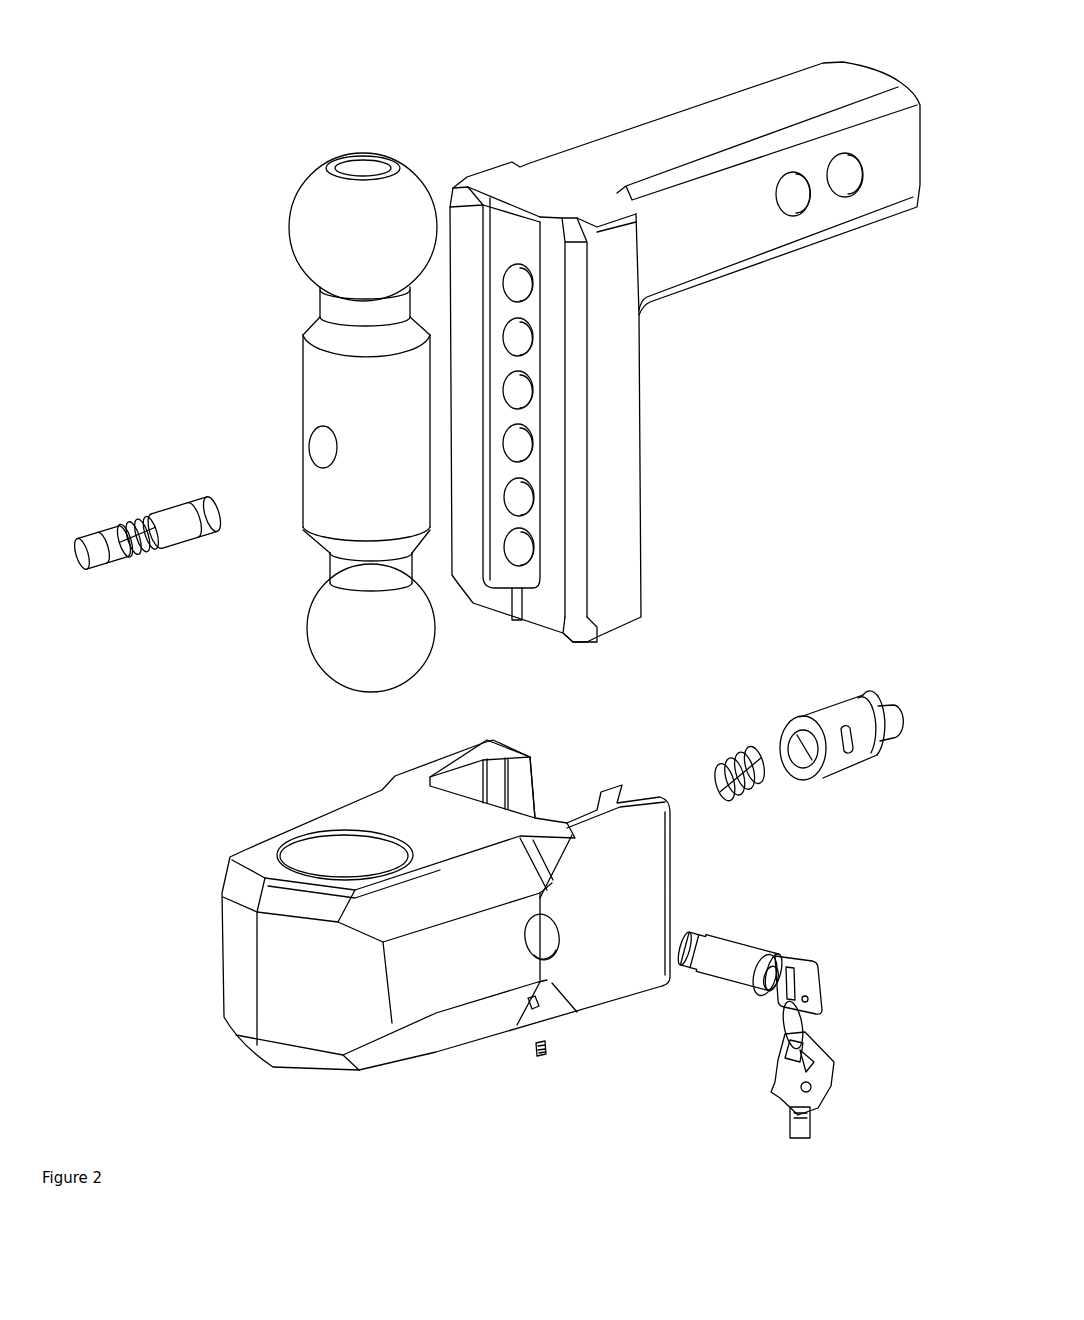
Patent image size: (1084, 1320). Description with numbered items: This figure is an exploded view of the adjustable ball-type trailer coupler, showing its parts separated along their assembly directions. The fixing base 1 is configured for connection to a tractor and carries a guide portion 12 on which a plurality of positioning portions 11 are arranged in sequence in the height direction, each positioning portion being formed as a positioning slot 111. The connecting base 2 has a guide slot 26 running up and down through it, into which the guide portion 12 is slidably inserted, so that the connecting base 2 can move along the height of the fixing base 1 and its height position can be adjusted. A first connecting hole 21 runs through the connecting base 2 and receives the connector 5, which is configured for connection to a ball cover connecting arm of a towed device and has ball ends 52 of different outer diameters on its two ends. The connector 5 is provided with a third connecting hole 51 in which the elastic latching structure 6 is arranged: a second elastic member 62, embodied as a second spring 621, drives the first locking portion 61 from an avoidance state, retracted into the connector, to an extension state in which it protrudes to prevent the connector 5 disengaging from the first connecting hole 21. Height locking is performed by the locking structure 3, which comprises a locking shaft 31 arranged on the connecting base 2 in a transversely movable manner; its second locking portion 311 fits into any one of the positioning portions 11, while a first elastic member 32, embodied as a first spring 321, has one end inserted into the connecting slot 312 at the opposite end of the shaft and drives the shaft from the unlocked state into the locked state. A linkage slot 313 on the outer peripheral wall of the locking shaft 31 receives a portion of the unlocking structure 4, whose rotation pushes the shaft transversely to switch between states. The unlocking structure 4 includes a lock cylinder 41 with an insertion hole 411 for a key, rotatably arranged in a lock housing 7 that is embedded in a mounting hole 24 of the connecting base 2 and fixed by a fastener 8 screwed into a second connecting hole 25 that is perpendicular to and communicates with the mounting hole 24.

The fixing base 1 is at (685, 349).
The positioning portion 11 is at (617, 516).
The positioning slot 111 is at (537, 493).
The guide portion 12 is at (623, 450).
The connecting base 2 is at (446, 893).
The first connecting hole 21 is at (340, 845).
The mounting hole 24 is at (547, 943).
The second connecting hole 25 is at (533, 1010).
The guide slot 26 is at (467, 773).
The locking structure 3 is at (788, 729).
The locking shaft 31 is at (850, 754).
The second locking portion 311 is at (896, 708).
The connecting slot 312 is at (803, 758).
The linkage slot 313 is at (846, 740).
The first elastic member 32 is at (690, 741).
The first spring 321 is at (733, 747).
The unlocking structure 4 is at (742, 1018).
The lock cylinder 41 is at (742, 960).
The insertion hole 411 is at (716, 987).
The connector 5 is at (330, 422).
The third connecting hole 51 is at (310, 442).
The ball end 52 is at (300, 225).
The elastic latching structure 6 is at (137, 490).
The first locking portion 61 is at (184, 522).
The second elastic member 62 is at (116, 543).
The second spring 621 is at (137, 537).
The lock housing 7 is at (742, 937).
The fastener 8 is at (539, 1058).